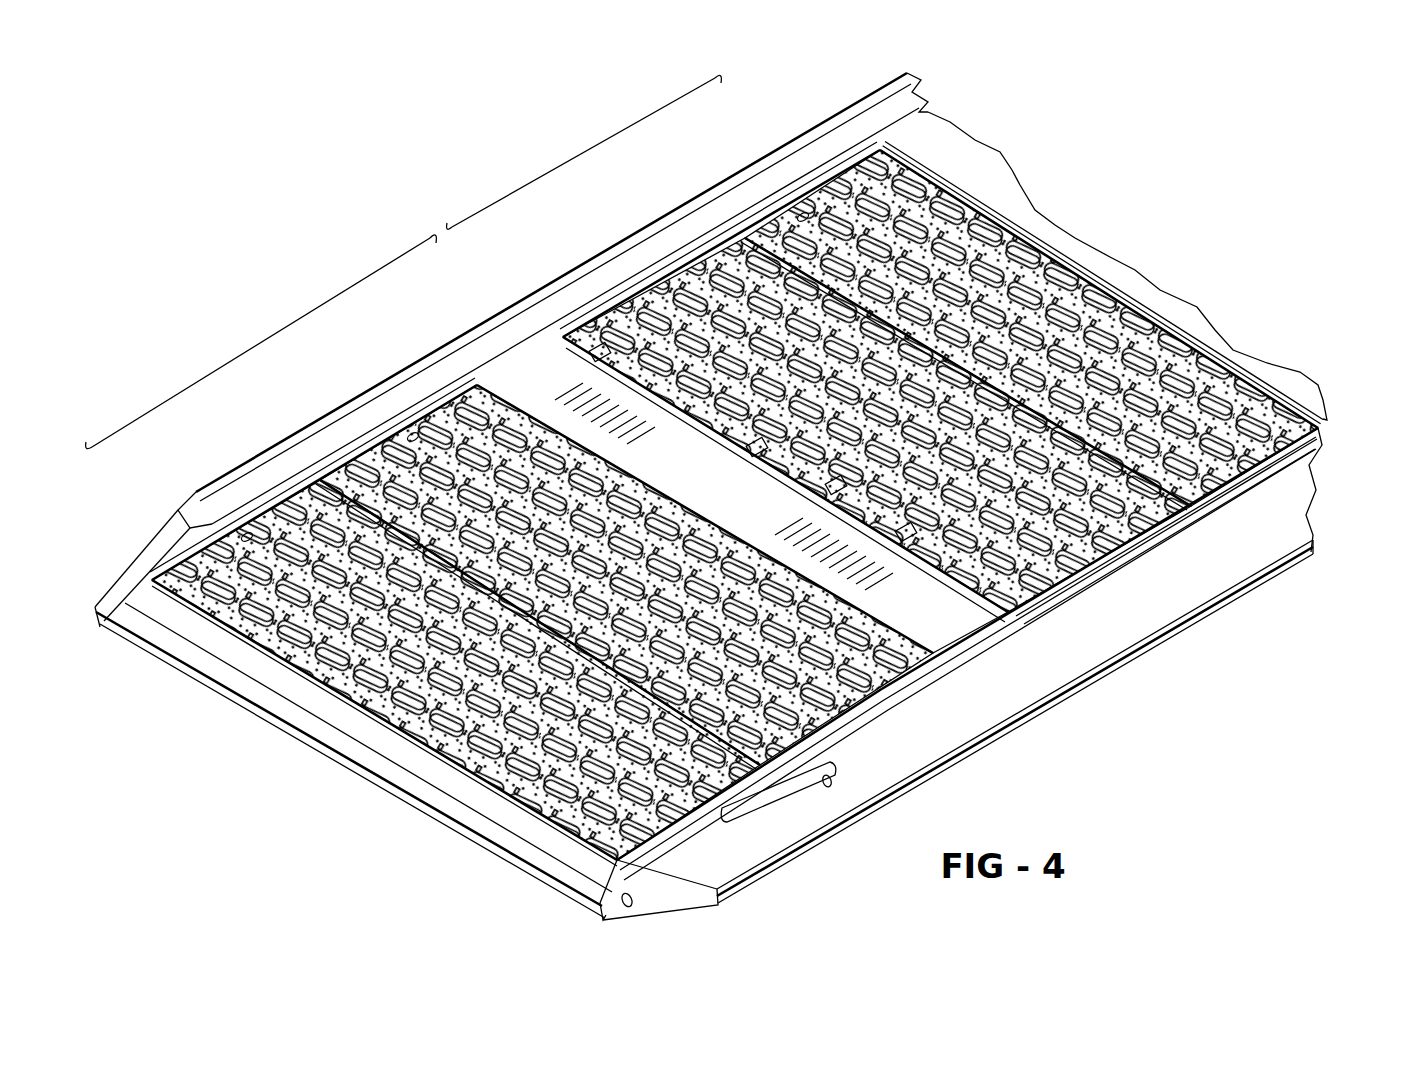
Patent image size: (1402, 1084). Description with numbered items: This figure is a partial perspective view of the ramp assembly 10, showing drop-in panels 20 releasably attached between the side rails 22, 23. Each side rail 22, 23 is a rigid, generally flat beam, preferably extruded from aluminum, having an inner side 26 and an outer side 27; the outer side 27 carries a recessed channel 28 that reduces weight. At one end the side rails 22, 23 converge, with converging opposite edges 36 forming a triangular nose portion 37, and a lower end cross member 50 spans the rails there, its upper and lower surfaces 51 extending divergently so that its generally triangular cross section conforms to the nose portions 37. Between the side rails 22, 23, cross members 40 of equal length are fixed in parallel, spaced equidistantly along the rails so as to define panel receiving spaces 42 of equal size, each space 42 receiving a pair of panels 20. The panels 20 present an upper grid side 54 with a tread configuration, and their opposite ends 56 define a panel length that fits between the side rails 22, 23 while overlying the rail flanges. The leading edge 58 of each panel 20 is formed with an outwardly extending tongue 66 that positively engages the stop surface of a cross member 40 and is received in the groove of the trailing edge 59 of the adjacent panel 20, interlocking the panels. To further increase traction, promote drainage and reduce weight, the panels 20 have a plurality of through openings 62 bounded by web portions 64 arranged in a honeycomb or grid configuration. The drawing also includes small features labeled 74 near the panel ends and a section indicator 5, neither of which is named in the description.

The ramp assembly 10 is at (432, 240).
The panel receiving space 42 is at (258, 346).
The inner side 26 is at (905, 120).
The outer side 27 is at (830, 122).
The side rail 22 is at (955, 738).
The recessed channel 28 is at (1293, 507).
The upper grid side 54 is at (1000, 222).
The side rail 23 is at (372, 445).
The panel 20 is at (853, 197).
The panel end 56 is at (793, 200).
The trailing edge 59 is at (960, 165).
The leading edge 58 is at (728, 270).
The hole 74 is at (803, 212).
The cross member 40 is at (547, 367).
The tongue 66 is at (895, 538).
The through opening 62 is at (1100, 290).
The web portion 64 is at (1195, 345).
The converging edge 36 is at (137, 567).
The triangular nose portion 37 is at (683, 911).
The lower end cross member 50 is at (293, 732).
The upper and lower surfaces 51 is at (490, 827).
The section line 5 is at (737, 236).